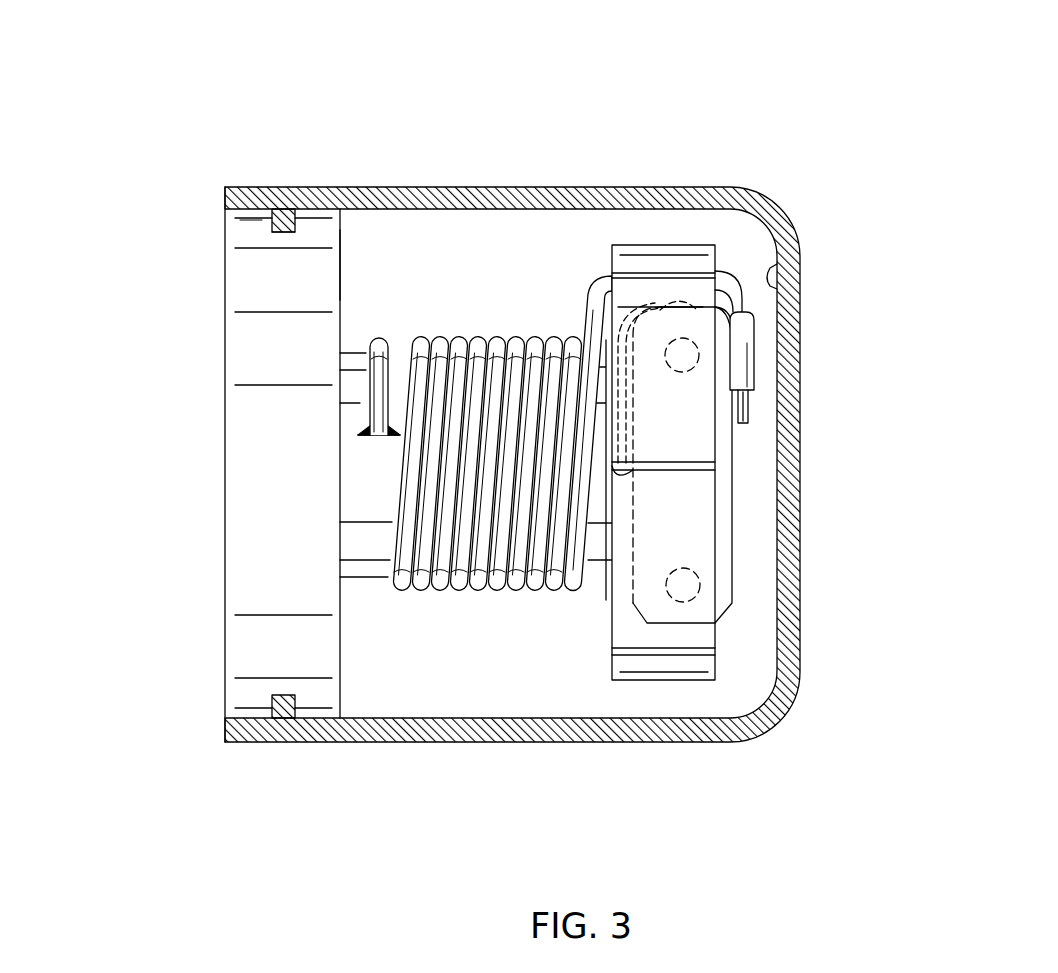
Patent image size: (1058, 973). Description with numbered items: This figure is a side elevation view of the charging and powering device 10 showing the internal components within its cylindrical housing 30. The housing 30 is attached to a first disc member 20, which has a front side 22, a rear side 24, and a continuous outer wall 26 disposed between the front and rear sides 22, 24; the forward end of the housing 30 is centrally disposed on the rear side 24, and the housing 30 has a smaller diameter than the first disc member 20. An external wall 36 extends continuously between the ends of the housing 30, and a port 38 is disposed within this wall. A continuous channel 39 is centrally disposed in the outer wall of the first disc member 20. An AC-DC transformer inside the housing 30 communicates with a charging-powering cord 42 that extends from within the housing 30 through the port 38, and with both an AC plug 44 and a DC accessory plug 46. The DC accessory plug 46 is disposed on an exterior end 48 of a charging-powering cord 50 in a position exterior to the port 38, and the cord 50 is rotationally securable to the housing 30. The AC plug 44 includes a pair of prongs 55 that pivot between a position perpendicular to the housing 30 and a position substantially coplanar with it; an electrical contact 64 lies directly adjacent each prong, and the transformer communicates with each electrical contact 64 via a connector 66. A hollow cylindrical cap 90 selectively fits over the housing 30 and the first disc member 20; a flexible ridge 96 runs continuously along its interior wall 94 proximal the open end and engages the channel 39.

The charging and powering device 10 is at (533, 104).
The first disc member 20 is at (224, 726).
The front side 22 is at (225, 320).
The rear side 24 is at (342, 267).
The continuous outer wall 26 is at (242, 220).
The cylindrical housing 30 is at (400, 348).
The external wall 36 is at (348, 348).
The port 38 is at (362, 434).
The continuous channel 39 is at (272, 231).
The charging-powering cord 42 is at (372, 380).
The AC plug 44 is at (732, 607).
The DC accessory plug 46 is at (750, 358).
The exterior end 48 is at (735, 306).
The charging-powering cord 50 is at (727, 278).
The prongs 55 is at (723, 540).
The electrical contact 64 is at (682, 297).
The connector 66 is at (645, 305).
The hollow cylindrical cap 90 is at (760, 193).
The interior wall 94 is at (778, 282).
The flexible ridge 96 is at (283, 215).